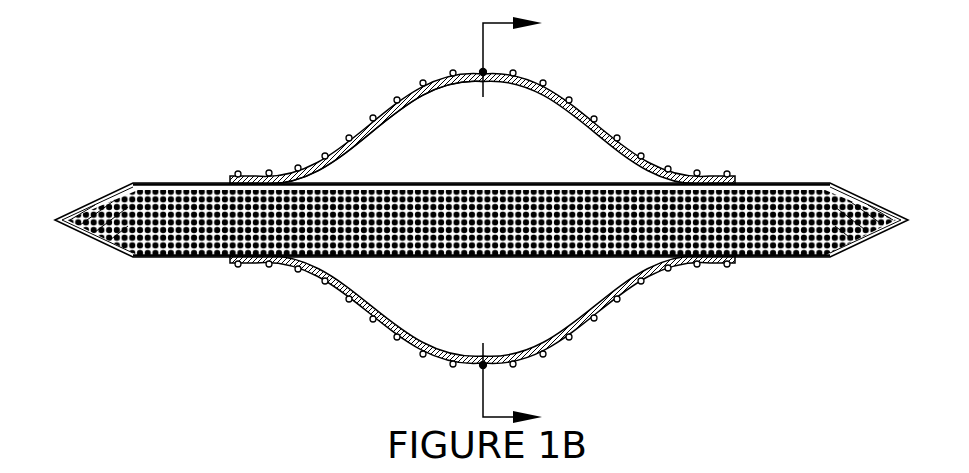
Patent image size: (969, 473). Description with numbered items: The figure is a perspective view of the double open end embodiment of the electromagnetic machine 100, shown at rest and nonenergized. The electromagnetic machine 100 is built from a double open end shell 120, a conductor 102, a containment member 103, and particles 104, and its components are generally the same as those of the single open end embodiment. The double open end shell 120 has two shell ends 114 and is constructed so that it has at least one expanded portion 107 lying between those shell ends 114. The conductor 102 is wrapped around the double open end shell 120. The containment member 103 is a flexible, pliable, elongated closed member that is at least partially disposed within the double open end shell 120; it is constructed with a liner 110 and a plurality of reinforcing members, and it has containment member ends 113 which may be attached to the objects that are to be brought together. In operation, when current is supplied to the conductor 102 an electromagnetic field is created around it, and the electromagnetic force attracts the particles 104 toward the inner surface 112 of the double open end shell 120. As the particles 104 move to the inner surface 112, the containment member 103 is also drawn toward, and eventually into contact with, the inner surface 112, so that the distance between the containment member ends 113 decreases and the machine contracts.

The electromagnetic machine 100 is at (696, 66).
The conductor 102 is at (567, 98).
The containment member 103 is at (582, 258).
The particles 104 is at (741, 258).
The expanded portion 107 is at (437, 362).
The liner 110 is at (397, 258).
The inner surface 112 is at (382, 133).
The containment member ends 113 is at (58, 220).
The shell ends 114 is at (232, 172).
The double open end shell 120 is at (337, 140).